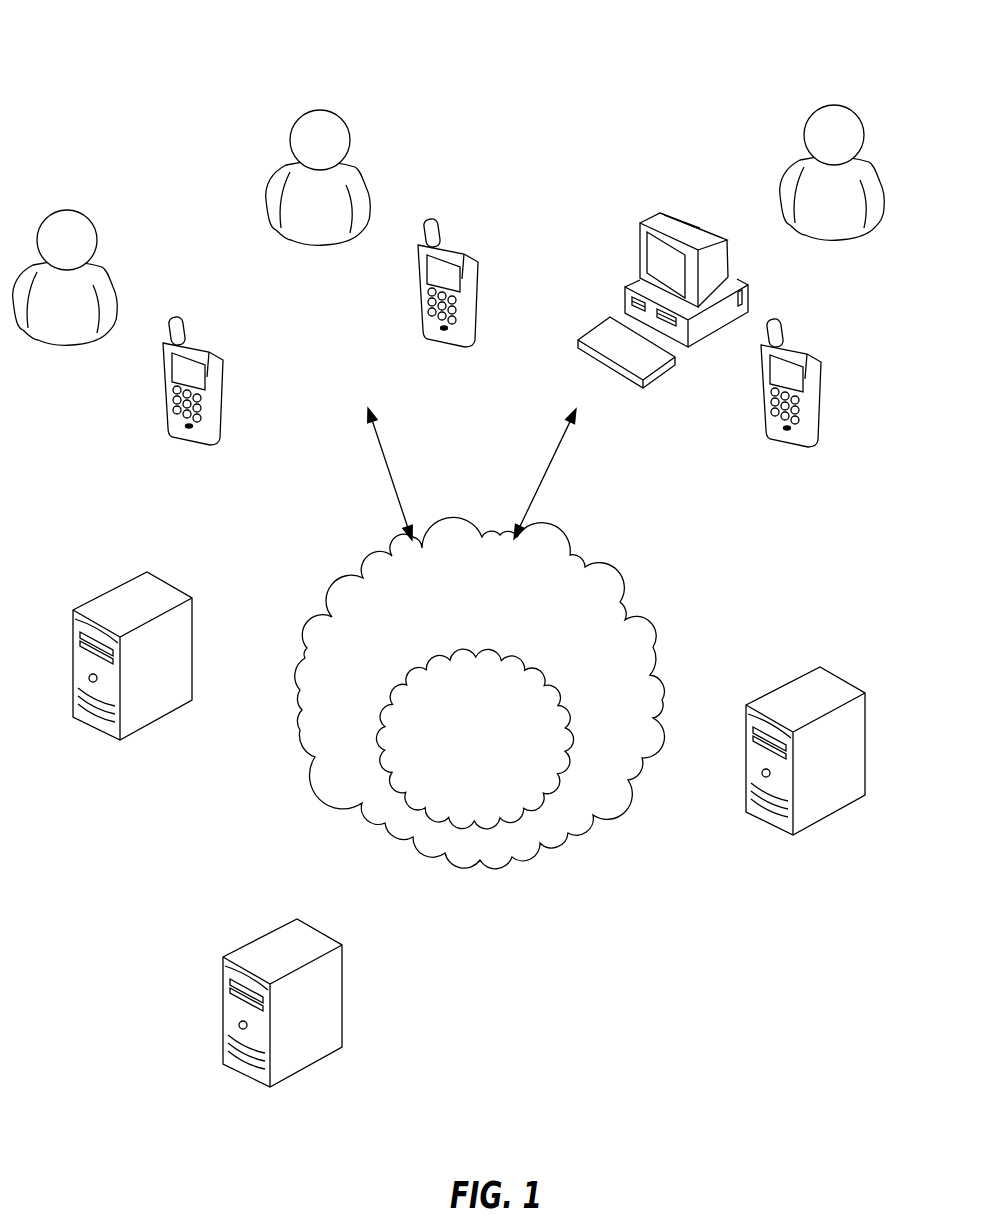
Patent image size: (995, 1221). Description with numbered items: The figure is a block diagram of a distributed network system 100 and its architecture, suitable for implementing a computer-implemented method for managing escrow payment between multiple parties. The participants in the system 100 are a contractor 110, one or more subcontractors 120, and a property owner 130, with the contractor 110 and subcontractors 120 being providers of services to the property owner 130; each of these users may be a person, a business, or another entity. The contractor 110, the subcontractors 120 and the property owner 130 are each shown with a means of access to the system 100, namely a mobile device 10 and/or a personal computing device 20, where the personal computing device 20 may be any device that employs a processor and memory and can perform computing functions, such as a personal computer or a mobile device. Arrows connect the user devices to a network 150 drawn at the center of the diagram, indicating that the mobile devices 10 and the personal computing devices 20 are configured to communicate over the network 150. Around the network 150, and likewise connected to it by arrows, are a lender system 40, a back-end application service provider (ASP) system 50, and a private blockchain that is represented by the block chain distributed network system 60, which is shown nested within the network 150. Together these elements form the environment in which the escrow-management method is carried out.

The system 100 is at (262, 36).
The contractor 110 is at (86, 314).
The subcontractor 120 is at (322, 223).
The property owner 130 is at (848, 216).
The mobile device 10 is at (500, 331).
The personal computing device 20 is at (663, 278).
The network 150 is at (462, 628).
The block chain distributed network system 60 is at (349, 942).
The back-end application service provider (ASP) system 50 is at (290, 648).
The lender system 40 is at (658, 760).